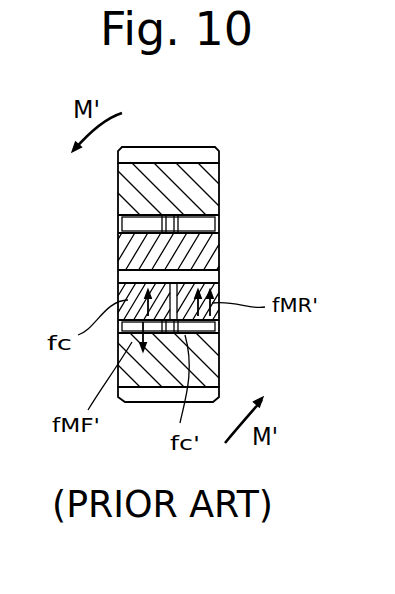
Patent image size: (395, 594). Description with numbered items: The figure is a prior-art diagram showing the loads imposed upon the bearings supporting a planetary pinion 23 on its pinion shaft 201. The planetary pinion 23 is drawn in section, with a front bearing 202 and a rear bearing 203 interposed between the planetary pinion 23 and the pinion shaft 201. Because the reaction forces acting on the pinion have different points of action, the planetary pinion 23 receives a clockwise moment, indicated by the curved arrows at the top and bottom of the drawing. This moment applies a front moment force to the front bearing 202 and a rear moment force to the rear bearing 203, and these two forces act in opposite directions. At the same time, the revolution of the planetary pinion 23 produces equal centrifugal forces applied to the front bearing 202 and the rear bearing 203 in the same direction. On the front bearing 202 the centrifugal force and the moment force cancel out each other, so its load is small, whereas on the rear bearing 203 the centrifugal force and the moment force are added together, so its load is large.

The planetary pinion 23 is at (207, 190).
The pinion shaft 201 is at (203, 248).
The front bearing 202 is at (156, 332).
The rear bearing 203 is at (203, 330).